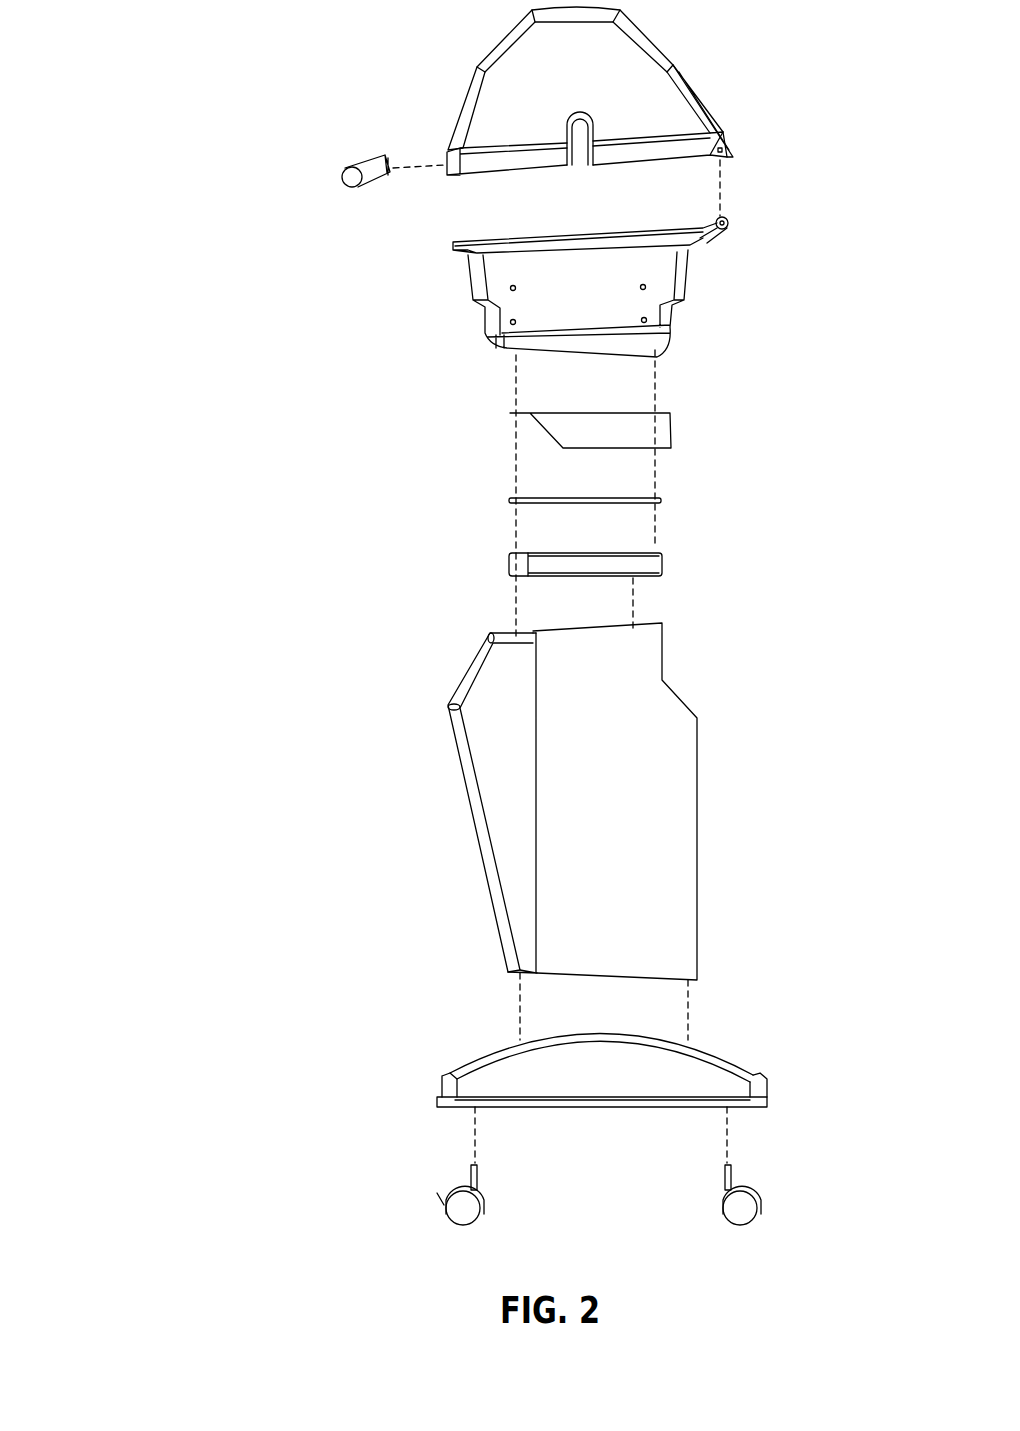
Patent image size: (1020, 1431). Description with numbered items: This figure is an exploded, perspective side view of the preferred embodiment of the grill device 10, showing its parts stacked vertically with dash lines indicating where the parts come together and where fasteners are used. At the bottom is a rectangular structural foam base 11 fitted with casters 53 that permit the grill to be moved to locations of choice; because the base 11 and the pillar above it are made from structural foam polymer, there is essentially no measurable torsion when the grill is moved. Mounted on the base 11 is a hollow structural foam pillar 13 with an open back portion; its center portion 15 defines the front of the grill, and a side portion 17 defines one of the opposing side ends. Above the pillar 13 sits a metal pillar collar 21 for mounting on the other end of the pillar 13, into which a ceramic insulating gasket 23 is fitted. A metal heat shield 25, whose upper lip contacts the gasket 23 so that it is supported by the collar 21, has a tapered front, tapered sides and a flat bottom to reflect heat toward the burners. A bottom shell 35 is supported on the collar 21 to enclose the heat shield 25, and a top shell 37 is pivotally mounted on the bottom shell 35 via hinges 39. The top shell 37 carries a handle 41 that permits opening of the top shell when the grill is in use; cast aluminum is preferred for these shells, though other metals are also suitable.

The device 10 is at (105, 1308).
The base 11 is at (729, 1050).
The pillar 13 is at (498, 784).
The center portion 15 is at (457, 670).
The side portion 17 is at (645, 824).
The pillar collar 21 is at (673, 563).
The insulating gasket 23 is at (500, 496).
The heat shield 25 is at (680, 424).
The bottom shell 35 is at (463, 291).
The top shell 37 is at (696, 78).
The hinges 39 is at (735, 221).
The handle 41 is at (352, 158).
The casters 53 is at (441, 1187).